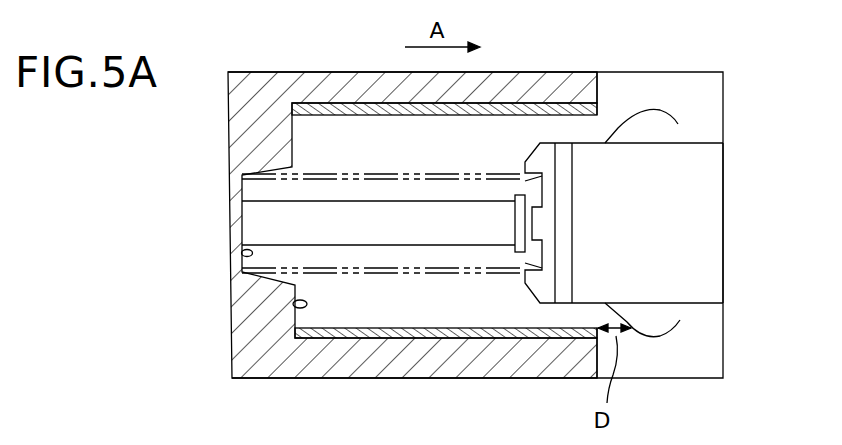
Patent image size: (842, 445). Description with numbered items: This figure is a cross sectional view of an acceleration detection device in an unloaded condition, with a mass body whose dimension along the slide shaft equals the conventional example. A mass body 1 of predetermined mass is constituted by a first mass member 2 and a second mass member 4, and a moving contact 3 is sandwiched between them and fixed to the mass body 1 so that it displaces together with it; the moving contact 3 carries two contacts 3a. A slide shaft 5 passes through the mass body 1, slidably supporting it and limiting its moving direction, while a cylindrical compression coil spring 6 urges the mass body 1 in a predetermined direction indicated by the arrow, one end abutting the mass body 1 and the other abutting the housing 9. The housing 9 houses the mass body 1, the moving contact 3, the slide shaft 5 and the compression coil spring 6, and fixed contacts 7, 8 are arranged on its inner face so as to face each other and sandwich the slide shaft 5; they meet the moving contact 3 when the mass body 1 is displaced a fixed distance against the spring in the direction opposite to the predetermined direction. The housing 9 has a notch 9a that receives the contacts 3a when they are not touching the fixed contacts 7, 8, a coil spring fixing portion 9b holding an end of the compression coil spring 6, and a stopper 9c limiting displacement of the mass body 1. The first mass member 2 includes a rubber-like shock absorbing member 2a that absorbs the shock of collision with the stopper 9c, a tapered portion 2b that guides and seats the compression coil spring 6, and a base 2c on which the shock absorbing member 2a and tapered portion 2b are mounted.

The mass body 1 is at (705, 250).
The first mass member 2 is at (564, 150).
The shock absorbing member 2a is at (546, 150).
The tapered portion 2b is at (530, 253).
The base 2c is at (565, 292).
The moving contact 3 is at (646, 336).
The contacts 3a is at (664, 108).
The second mass member 4 is at (712, 187).
The slide shaft 5 is at (452, 213).
The compression coil spring 6 is at (363, 176).
The fixed contact 7 is at (326, 110).
The fixed contact 8 is at (343, 335).
The housing 9 is at (255, 78).
The notch 9a is at (638, 86).
The coil spring fixing portion 9b is at (241, 254).
The stopper 9c is at (293, 302).